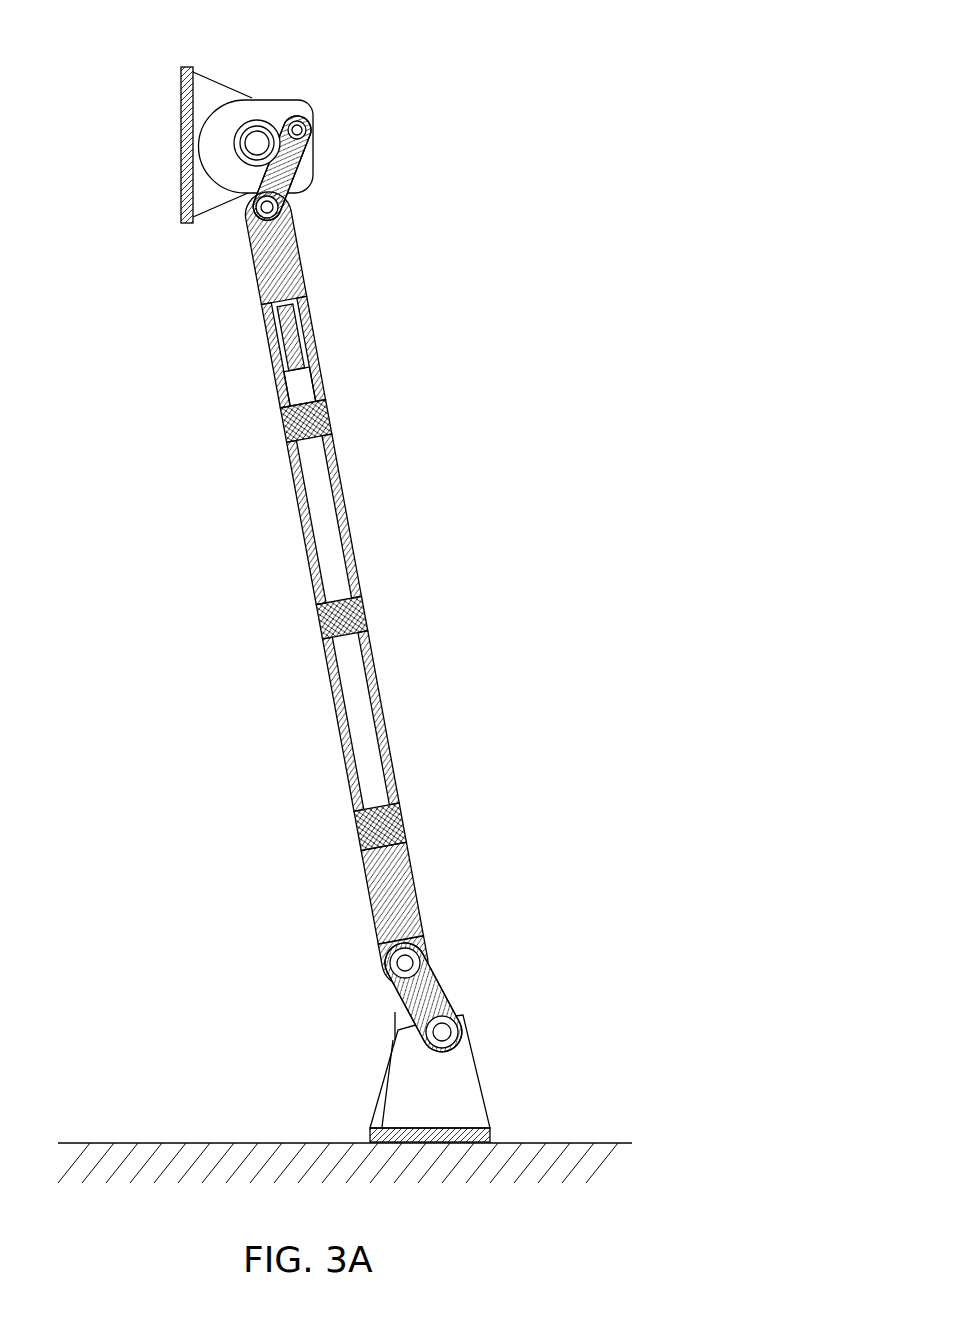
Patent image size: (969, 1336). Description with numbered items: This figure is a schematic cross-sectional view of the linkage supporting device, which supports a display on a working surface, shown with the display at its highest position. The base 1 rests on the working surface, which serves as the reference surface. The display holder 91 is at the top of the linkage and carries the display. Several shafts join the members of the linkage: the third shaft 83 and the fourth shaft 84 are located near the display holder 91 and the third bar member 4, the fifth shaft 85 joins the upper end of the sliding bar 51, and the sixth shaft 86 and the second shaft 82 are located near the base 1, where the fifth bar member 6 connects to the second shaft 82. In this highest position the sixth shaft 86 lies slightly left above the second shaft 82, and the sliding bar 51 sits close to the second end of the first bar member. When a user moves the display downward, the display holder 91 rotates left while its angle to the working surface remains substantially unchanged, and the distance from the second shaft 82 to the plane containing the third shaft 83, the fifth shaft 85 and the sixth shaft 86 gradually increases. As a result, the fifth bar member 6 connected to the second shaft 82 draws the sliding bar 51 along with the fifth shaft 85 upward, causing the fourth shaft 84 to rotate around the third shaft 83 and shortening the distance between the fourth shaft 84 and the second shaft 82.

The display holder 91 is at (205, 72).
The third shaft 83 is at (291, 131).
The fourth shaft 84 is at (308, 128).
The third bar member 4 is at (305, 160).
The fifth shaft 85 is at (290, 205).
The sliding bar 51 is at (300, 250).
The sixth shaft 86 is at (418, 955).
The fifth bar member 6 is at (432, 982).
The second shaft 82 is at (457, 1025).
The base 1 is at (455, 1095).